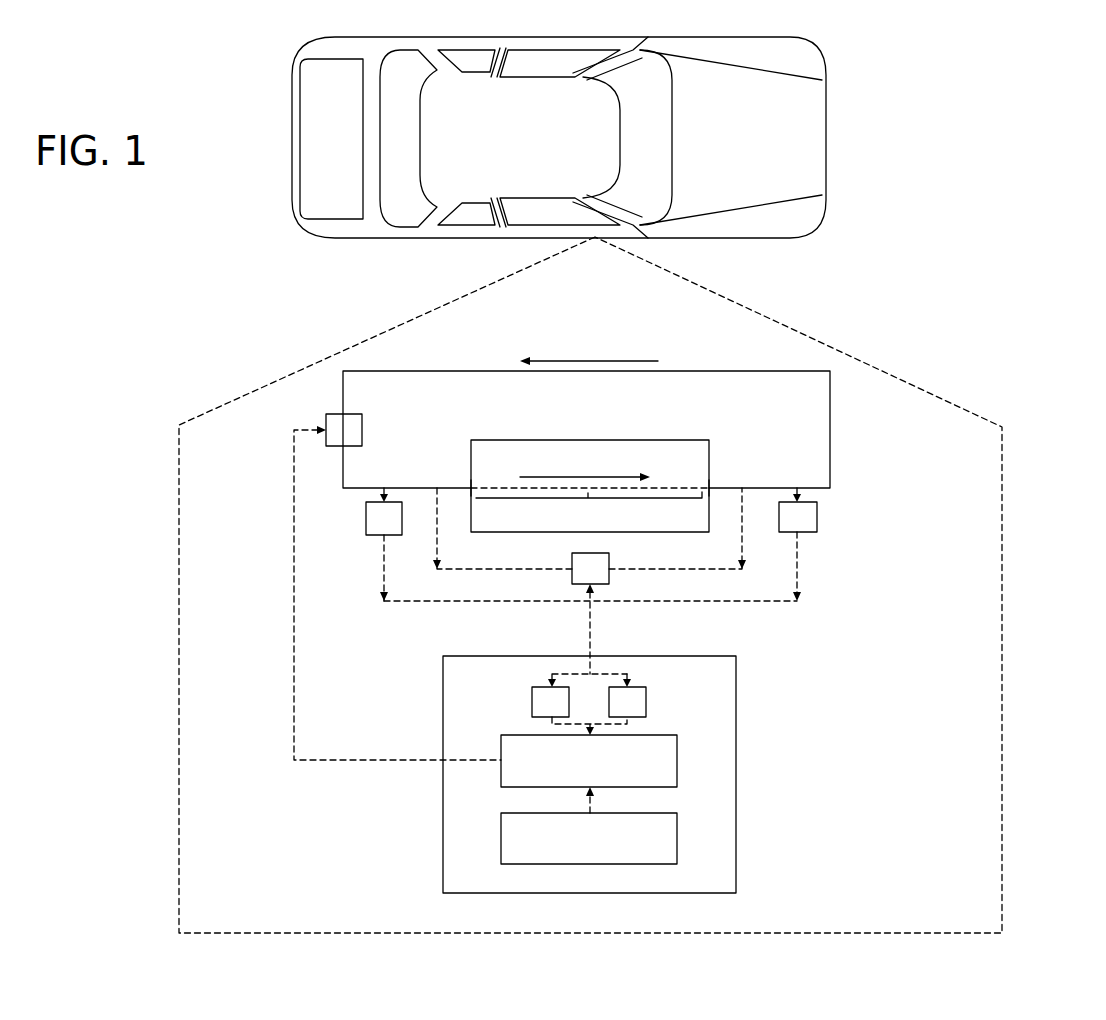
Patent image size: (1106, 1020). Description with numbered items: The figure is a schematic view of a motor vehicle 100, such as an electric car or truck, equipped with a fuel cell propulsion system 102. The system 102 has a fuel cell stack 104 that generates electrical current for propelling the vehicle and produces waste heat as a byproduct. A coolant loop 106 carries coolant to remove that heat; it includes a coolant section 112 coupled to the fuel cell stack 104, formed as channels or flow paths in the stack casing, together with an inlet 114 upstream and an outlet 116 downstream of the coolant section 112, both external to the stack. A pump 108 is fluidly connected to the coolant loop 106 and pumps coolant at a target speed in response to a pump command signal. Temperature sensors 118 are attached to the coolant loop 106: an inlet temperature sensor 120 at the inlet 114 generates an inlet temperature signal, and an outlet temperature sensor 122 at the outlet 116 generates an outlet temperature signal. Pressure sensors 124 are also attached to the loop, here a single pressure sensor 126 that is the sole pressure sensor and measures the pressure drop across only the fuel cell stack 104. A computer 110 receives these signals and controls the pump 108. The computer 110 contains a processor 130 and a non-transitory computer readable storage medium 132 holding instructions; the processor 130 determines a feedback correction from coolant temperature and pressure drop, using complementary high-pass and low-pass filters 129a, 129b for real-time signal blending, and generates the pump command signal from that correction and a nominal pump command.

The motor vehicle 100 is at (283, 63).
The fuel cell propulsion system 102 is at (896, 333).
The fuel cell stack 104 is at (489, 440).
The coolant loop 106 is at (443, 371).
The pump 108 is at (336, 414).
The computer 110 is at (443, 685).
The coolant section 112 is at (589, 511).
The inlet 114 is at (470, 488).
The outlet 116 is at (710, 488).
The temperature sensors 118 is at (605, 544).
The inlet temperature sensor 120 is at (366, 520).
The outlet temperature sensor 122 is at (803, 532).
The pressure sensors 124 is at (590, 581).
The pressure sensor 126 is at (609, 570).
The high-pass filter 129a is at (532, 708).
The low-pass filter 129b is at (646, 708).
The processor 130 is at (677, 748).
The non-transitory computer readable storage medium 132 is at (677, 825).